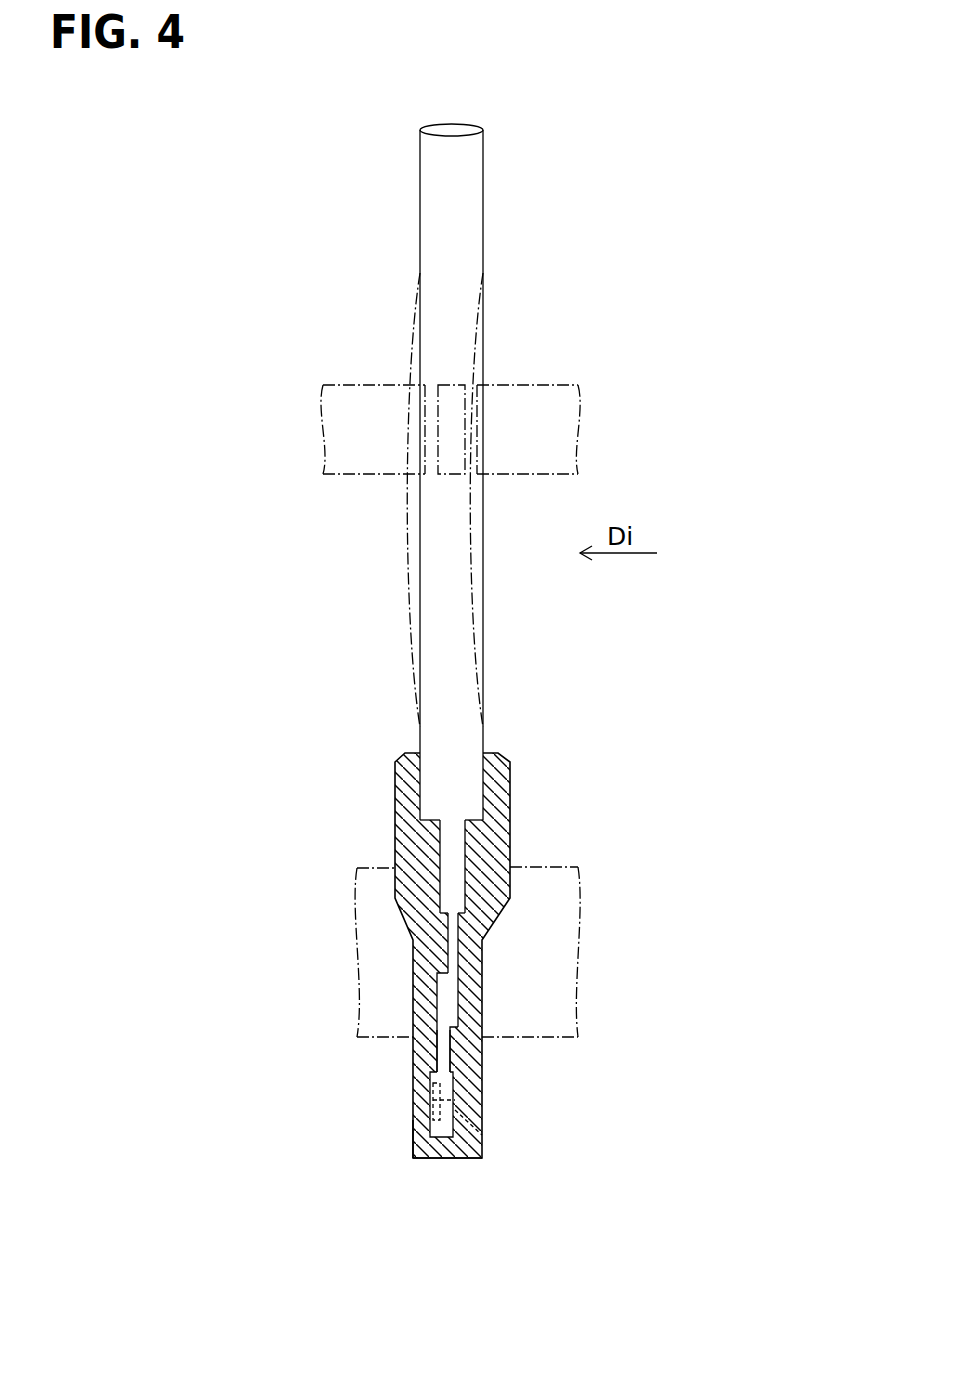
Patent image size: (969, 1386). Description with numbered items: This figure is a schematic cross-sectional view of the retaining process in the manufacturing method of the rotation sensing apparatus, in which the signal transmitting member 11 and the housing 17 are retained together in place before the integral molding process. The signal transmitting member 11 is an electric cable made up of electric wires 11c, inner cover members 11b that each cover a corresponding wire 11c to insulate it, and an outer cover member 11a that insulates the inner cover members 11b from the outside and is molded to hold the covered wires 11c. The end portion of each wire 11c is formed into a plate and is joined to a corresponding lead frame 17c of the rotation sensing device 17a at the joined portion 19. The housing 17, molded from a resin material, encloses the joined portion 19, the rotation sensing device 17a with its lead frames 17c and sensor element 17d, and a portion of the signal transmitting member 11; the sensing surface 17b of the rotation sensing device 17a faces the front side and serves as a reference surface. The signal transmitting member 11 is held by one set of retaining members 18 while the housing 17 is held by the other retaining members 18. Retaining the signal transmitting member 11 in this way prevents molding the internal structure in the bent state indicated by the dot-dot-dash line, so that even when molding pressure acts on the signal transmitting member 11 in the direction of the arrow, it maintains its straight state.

The signal transmitting member 11 is at (462, 217).
The outer cover member 11a is at (450, 785).
The inner cover member 11b is at (453, 865).
The electric wire 11c is at (458, 935).
The housing 17 is at (324, 760).
The rotation sensing device 17a is at (430, 1087).
The sensing surface 17b is at (414, 1128).
The lead frame 17c is at (445, 1047).
The sensor element 17d is at (482, 1135).
The retaining member 18 is at (345, 413).
The joined portion 19 is at (487, 973).